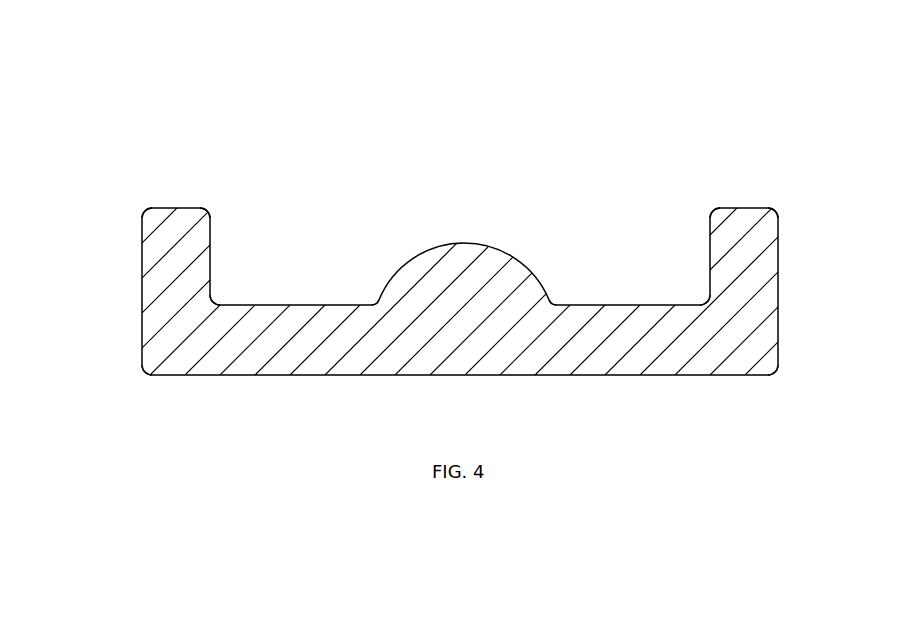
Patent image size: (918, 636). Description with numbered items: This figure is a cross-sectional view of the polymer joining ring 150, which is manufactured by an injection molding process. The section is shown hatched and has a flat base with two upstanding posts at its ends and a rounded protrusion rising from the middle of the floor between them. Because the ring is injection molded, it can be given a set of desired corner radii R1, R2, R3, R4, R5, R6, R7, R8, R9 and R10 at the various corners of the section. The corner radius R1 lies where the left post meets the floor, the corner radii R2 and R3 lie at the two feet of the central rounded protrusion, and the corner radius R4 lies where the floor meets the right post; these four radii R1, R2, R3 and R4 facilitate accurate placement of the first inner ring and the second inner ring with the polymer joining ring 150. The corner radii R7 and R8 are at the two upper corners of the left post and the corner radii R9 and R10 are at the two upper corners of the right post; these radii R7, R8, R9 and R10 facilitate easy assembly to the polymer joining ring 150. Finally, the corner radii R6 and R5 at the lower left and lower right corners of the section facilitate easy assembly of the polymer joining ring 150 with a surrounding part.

The polymer joining ring 150 is at (130, 78).
The corner radius R1 is at (216, 300).
The corner radius R2 is at (371, 300).
The corner radius R3 is at (553, 302).
The corner radius R4 is at (702, 302).
The corner radius R5 is at (776, 371).
The corner radius R6 is at (143, 370).
The corner radius R7 is at (146, 213).
The corner radius R8 is at (204, 213).
The corner radius R9 is at (714, 213).
The corner radius R10 is at (774, 213).